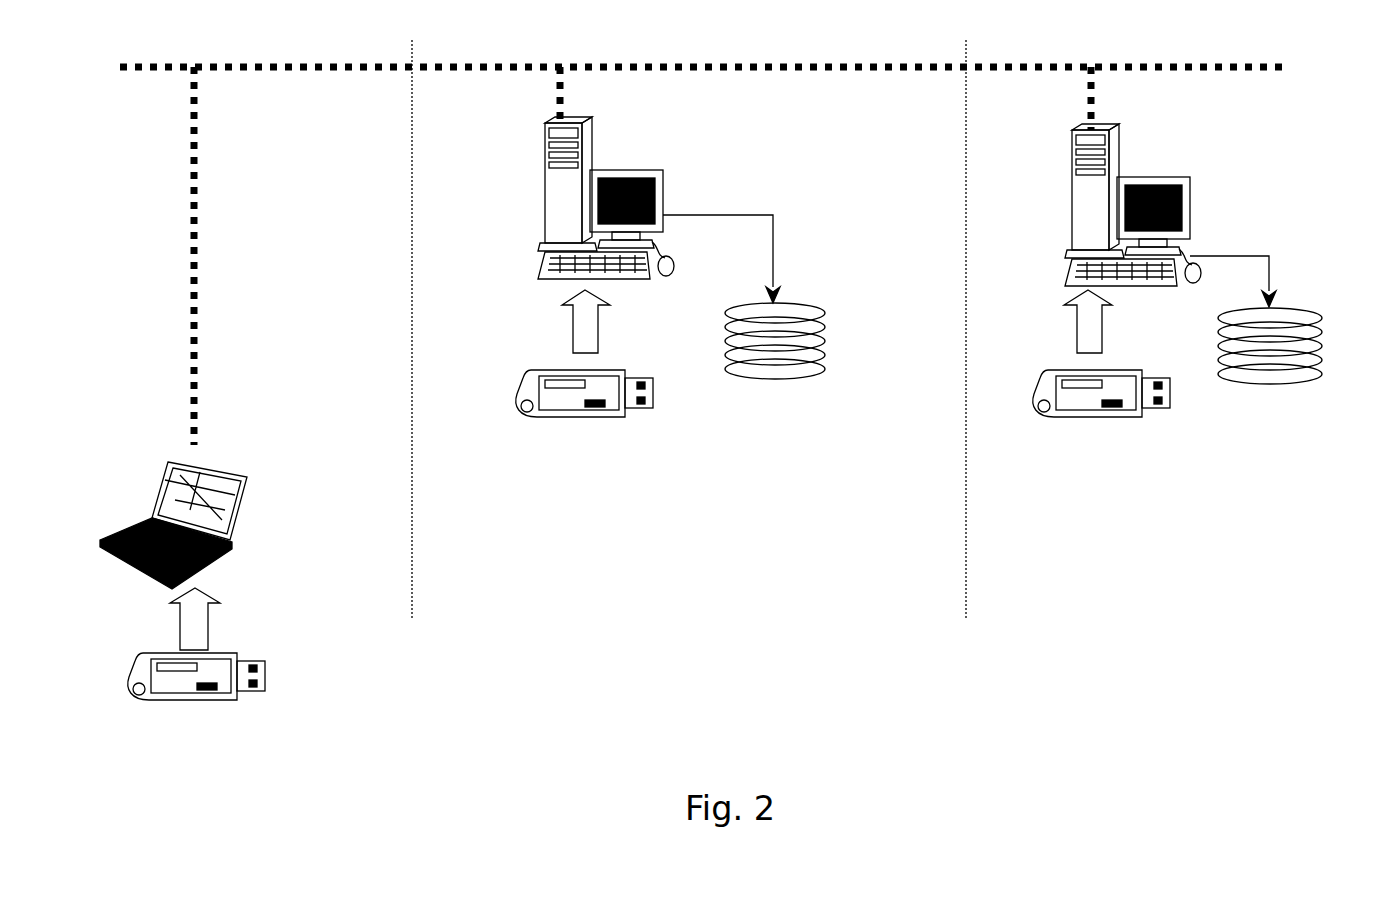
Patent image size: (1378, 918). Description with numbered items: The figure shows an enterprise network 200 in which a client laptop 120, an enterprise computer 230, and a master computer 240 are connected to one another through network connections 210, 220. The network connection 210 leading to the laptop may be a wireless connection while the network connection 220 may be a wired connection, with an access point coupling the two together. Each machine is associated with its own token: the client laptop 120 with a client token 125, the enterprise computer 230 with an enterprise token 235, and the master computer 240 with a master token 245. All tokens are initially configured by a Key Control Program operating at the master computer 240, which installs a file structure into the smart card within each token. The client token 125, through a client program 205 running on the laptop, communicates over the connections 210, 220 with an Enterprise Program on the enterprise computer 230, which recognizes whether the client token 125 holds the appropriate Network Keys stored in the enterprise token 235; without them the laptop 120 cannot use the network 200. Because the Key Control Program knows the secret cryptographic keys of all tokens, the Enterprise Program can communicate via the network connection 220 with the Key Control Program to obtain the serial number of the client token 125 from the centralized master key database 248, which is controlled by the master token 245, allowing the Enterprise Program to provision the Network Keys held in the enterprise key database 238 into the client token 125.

The enterprise network 200 is at (895, 652).
The client laptop 120 is at (240, 568).
The client token 125 is at (283, 690).
The client program 205 is at (230, 472).
The network connection 210 is at (208, 160).
The network connection 220 is at (848, 42).
The enterprise computer 230 is at (687, 167).
The enterprise token 235 is at (672, 408).
The enterprise key database 238 is at (848, 343).
The master computer 240 is at (1213, 183).
The master token 245 is at (1007, 407).
The master key database 248 is at (1212, 395).